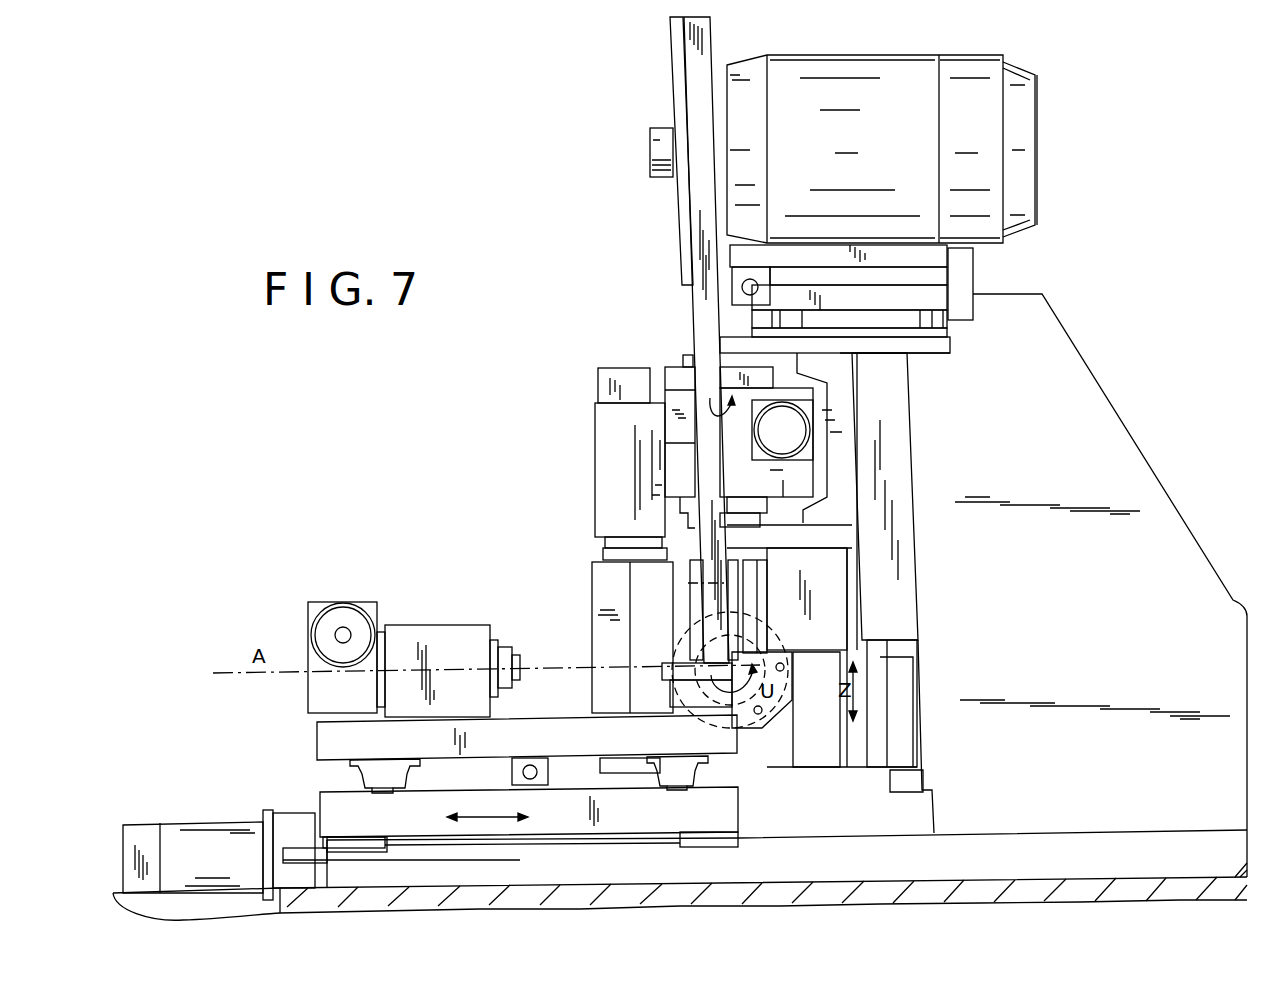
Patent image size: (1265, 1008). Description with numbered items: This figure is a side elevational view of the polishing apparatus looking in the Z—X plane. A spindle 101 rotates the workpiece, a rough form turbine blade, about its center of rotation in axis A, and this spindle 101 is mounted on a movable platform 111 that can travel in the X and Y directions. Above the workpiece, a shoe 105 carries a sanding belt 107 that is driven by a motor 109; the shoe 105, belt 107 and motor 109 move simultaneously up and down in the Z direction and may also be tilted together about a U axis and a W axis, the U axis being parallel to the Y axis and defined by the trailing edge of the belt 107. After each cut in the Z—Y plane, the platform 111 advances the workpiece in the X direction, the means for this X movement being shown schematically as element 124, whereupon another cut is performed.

The spindle 101 is at (505, 643).
The shoe 105 is at (697, 648).
The sanding belt 107 is at (723, 533).
The motor 109 is at (1025, 163).
The movable platform 111 is at (338, 798).
The means for moving the platform in the X direction 124 is at (220, 840).